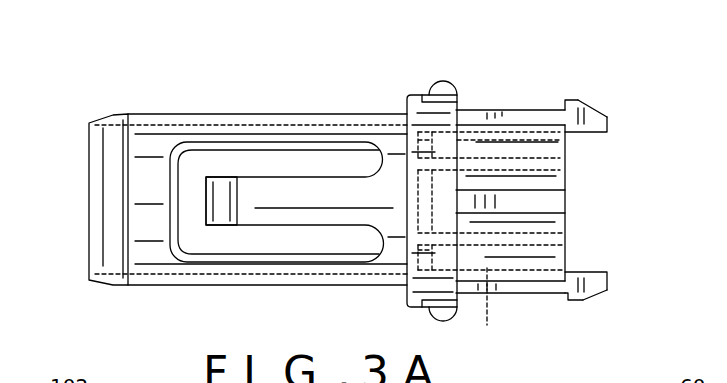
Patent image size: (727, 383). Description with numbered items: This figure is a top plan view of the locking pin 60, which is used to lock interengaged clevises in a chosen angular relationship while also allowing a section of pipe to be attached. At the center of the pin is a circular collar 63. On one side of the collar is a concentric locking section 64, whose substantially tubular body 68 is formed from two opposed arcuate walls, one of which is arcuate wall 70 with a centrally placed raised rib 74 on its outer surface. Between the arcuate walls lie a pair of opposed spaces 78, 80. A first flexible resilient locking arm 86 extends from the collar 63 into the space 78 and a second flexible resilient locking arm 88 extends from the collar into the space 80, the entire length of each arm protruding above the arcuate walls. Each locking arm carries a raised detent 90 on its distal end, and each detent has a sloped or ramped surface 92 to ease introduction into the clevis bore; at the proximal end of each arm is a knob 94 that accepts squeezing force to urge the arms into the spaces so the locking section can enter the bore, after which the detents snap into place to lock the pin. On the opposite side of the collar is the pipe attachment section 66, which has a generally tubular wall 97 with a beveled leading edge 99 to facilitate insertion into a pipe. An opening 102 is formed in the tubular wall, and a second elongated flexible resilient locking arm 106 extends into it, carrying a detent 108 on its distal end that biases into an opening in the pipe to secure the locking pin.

The beveled leading edge 99 is at (107, 115).
The opening 102 is at (192, 171).
The pipe attachment section 66 is at (208, 115).
The tubular wall 97 is at (257, 122).
The second elongated flexible resilient locking arm 106 is at (300, 200).
The detent 108 is at (223, 200).
The circular collar 63 is at (422, 112).
The knob 94 is at (441, 90).
The locking pin 60 is at (492, 95).
The space 80 is at (513, 133).
The second flexible resilient locking arm 88 is at (550, 116).
The arcuate wall 70 is at (548, 181).
The raised rib 74 is at (544, 206).
The tubular body 68 is at (552, 252).
The locking section 64 is at (525, 268).
The first flexible resilient locking arm 86 is at (538, 287).
The space 78 is at (489, 310).
The sloped or ramped surface 92 is at (587, 103).
The raised detent 90 is at (592, 123).